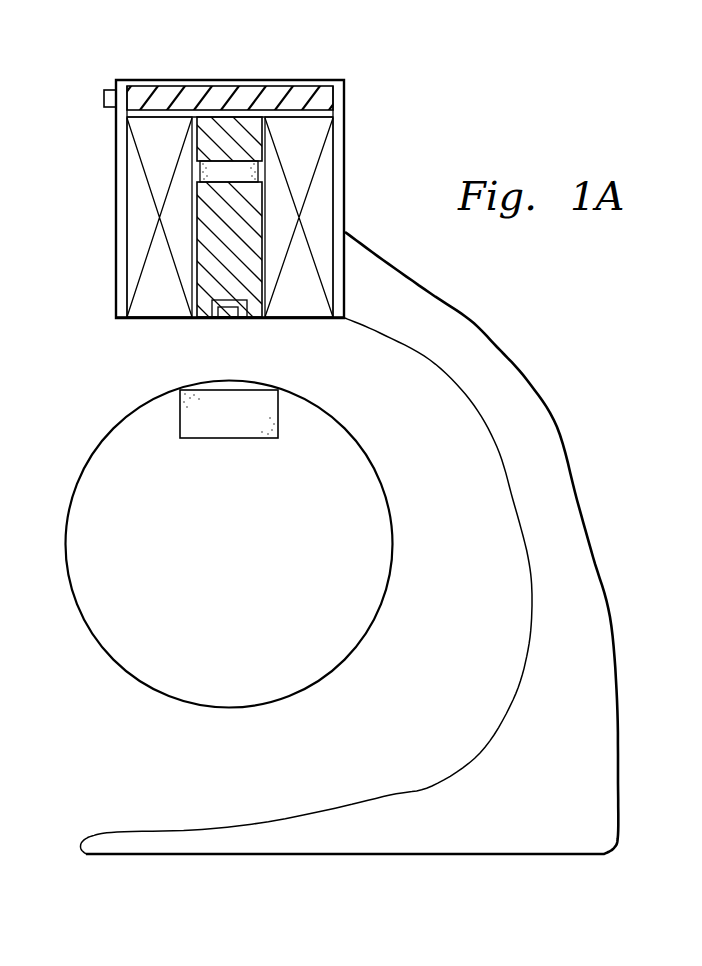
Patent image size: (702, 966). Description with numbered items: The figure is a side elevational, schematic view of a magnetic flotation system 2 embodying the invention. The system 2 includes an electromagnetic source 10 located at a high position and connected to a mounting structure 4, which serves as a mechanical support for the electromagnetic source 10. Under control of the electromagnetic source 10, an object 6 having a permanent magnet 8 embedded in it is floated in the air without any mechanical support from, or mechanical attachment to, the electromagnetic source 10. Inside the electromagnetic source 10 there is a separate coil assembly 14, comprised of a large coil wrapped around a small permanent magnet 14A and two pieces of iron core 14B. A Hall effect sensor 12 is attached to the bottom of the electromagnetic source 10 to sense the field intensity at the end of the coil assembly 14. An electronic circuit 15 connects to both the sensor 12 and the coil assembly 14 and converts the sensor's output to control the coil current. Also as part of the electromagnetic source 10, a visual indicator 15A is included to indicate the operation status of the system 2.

The electromagnetic source 10 is at (217, 185).
The electronic circuit 15 is at (216, 90).
The visual indicator 15A is at (108, 98).
The coil assembly 14 is at (130, 190).
The small permanent magnet 14A is at (203, 172).
The iron core 14B is at (215, 250).
The Hall effect sensor 12 is at (226, 319).
The mounting structure 4 is at (490, 339).
The magnetic flotation system 2 is at (262, 527).
The object 6 is at (414, 582).
The permanent magnet 8 is at (228, 441).